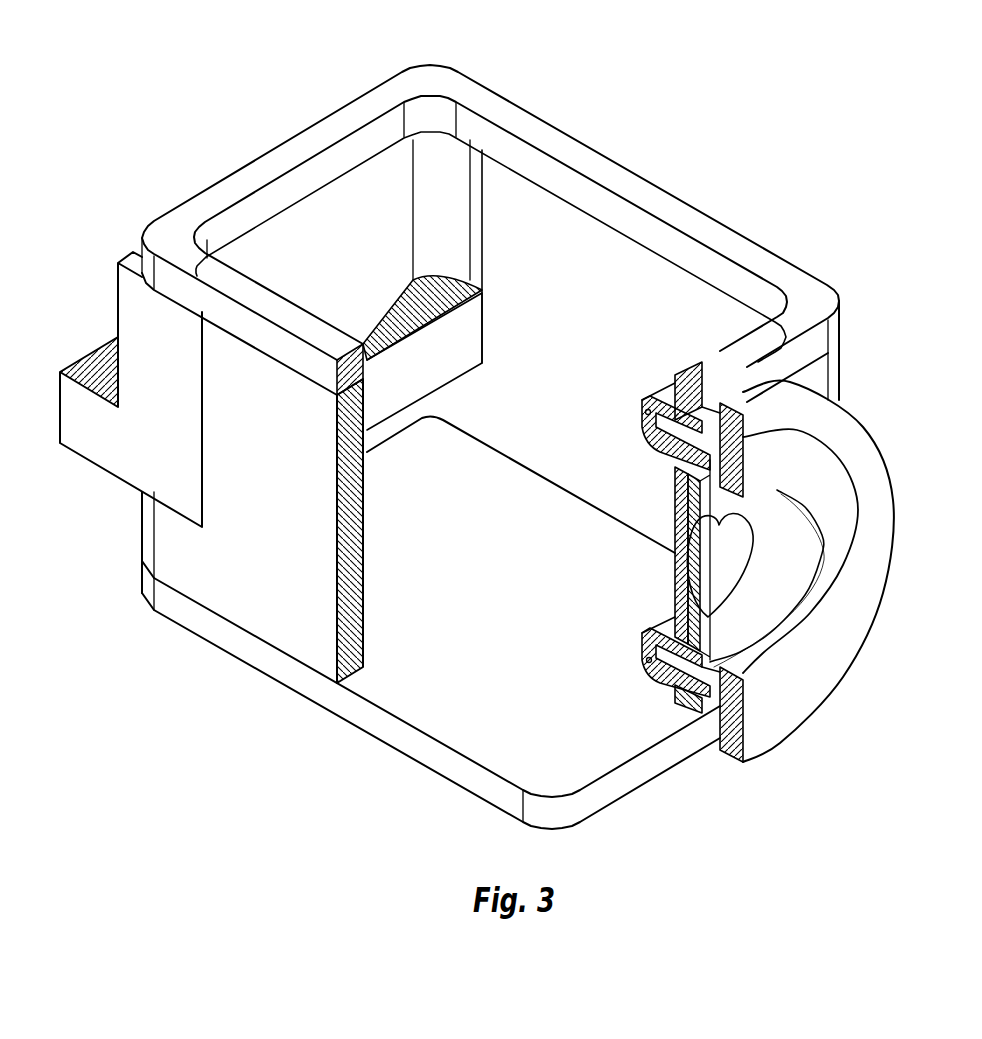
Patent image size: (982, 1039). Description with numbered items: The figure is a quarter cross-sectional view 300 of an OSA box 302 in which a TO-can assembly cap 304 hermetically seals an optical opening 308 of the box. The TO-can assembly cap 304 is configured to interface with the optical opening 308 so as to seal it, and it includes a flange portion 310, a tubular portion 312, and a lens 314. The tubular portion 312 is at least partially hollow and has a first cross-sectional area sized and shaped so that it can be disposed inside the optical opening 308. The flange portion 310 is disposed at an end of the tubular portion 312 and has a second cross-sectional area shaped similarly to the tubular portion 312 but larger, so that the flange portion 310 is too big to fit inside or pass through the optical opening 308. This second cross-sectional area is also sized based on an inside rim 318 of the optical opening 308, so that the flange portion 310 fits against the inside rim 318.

The quarter cross-sectional view 300 is at (882, 118).
The OSA box 302 is at (302, 695).
The TO-can assembly cap 304 is at (712, 590).
The optical opening 308 is at (660, 562).
The flange portion 310 is at (640, 637).
The tubular portion 312 is at (745, 427).
The lens 314 is at (703, 550).
The inside rim 318 is at (650, 660).